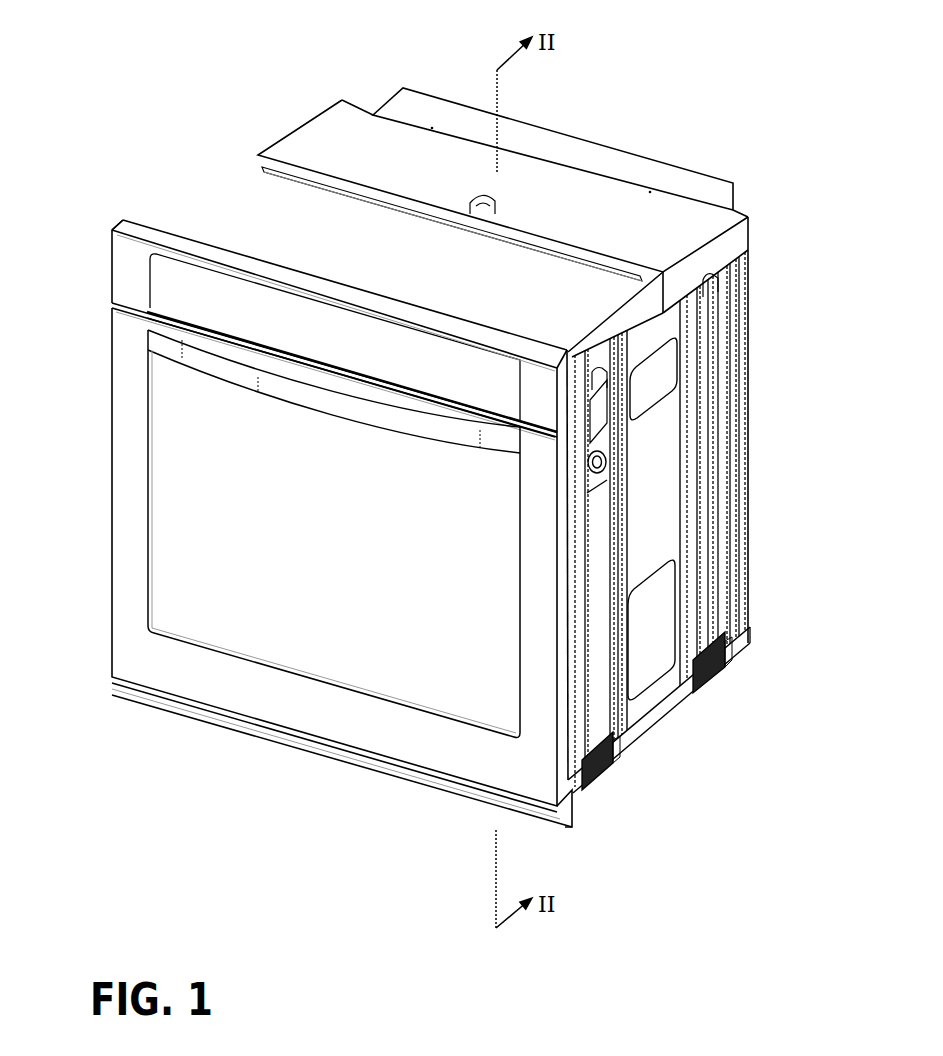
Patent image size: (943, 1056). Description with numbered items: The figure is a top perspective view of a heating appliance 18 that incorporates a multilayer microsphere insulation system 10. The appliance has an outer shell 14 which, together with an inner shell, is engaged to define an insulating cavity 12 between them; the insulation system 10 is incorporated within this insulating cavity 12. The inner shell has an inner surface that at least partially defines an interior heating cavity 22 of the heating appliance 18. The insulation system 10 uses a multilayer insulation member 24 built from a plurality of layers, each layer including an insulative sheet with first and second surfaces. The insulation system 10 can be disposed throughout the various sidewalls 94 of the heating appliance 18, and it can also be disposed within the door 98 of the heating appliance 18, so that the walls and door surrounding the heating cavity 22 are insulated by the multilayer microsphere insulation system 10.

The multilayer microsphere insulation system 10 is at (668, 466).
The insulating cavity 12 is at (648, 513).
The outer shell 14 is at (707, 298).
The heating appliance 18 is at (206, 176).
The heating cavity 22 is at (340, 645).
The multilayer insulation member 24 is at (345, 155).
The sidewall 94 is at (652, 220).
The door 98 is at (127, 490).